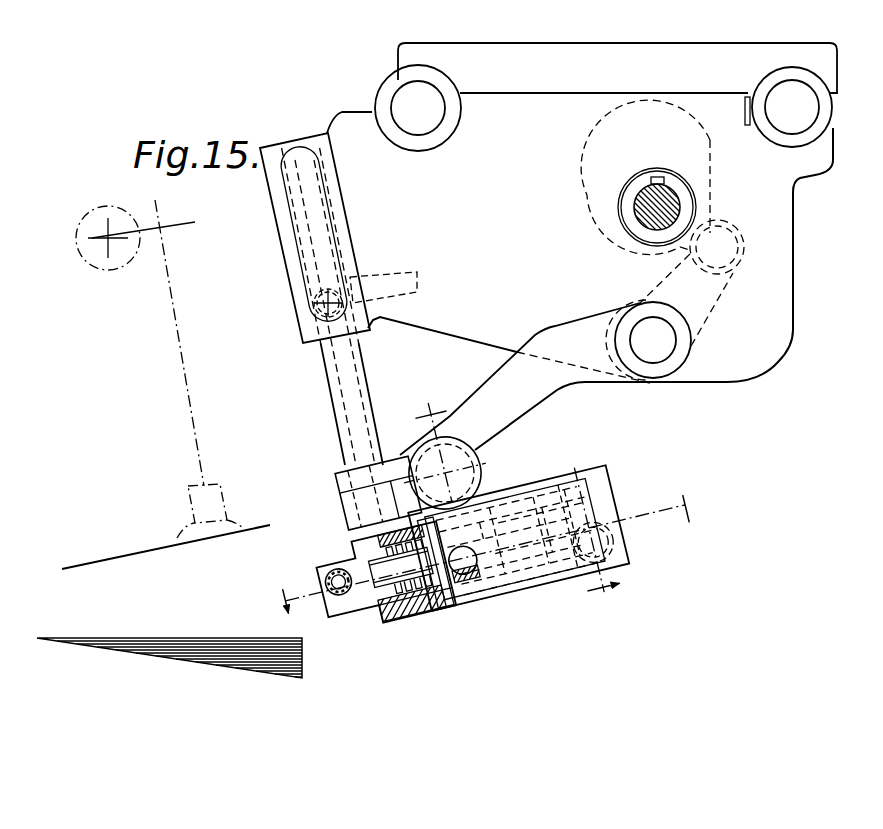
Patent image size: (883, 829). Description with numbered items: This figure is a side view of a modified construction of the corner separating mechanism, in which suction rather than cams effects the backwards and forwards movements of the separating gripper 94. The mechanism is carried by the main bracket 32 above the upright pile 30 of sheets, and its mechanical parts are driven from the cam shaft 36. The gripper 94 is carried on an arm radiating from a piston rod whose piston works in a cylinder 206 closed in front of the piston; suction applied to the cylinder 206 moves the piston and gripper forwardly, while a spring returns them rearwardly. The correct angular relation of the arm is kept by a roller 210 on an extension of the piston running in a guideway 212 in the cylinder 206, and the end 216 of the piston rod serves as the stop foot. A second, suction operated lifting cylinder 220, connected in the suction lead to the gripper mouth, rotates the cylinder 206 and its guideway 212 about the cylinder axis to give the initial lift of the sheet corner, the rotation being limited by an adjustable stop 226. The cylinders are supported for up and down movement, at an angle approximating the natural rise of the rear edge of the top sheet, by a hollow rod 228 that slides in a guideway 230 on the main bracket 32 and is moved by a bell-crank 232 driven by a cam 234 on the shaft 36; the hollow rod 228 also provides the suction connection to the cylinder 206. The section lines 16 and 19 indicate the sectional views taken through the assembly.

The pile 30 is at (252, 638).
The main bracket 32 is at (793, 248).
The shaft 36 is at (672, 202).
The separating gripper 94 is at (340, 597).
The cylinder 206 is at (412, 617).
The roller 210 is at (573, 565).
The guideway 212 is at (523, 577).
The end of the piston rod 216 is at (380, 620).
The lifting cylinder 220 is at (480, 456).
The adjustable stop 226 is at (470, 586).
The hollow rod 228 is at (327, 375).
The guideway 230 is at (293, 250).
The bell-crank 232 is at (537, 390).
The cam 234 is at (710, 150).
The section line 16- 16 is at (484, 541).
The section line 19- 19 is at (513, 497).